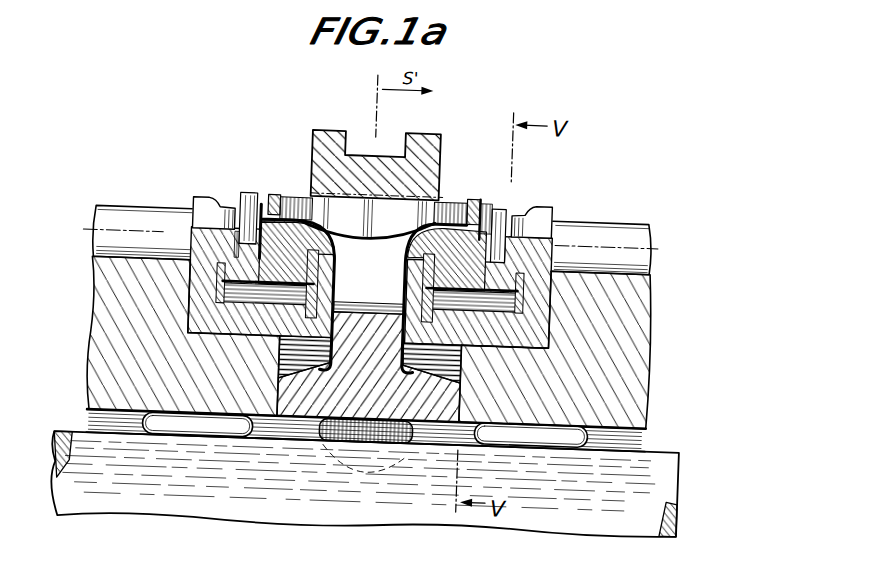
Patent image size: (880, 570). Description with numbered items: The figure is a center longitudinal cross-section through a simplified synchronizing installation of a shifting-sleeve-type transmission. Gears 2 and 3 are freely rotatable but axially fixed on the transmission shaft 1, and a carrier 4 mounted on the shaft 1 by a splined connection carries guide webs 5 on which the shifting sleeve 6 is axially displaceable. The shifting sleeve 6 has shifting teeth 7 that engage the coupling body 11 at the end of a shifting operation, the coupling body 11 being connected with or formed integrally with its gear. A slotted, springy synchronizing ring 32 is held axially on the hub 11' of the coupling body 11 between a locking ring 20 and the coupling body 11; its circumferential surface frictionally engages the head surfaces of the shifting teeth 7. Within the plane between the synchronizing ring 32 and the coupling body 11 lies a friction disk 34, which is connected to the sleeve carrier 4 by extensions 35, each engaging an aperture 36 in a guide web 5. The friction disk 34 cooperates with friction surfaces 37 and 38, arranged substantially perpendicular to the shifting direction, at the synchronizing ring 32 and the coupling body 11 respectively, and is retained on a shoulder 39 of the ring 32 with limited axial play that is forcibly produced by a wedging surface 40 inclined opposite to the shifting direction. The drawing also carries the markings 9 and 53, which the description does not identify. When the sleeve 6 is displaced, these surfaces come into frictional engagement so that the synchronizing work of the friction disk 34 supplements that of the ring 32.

The transmission shaft 1 is at (579, 519).
The gear 2 is at (90, 319).
The gear 3 is at (649, 349).
The carrier 4 is at (303, 415).
The guide webs 5 is at (453, 202).
The shifting sleeve 6 is at (382, 165).
The shifting teeth 7 is at (374, 218).
The sleeve 9 is at (200, 203).
The coupling body 11 is at (502, 267).
The hub 11' is at (504, 365).
The locking ring 20 is at (419, 300).
The synchronizing ring 32 is at (278, 276).
The friction disk 34 is at (297, 253).
The extensions 35 is at (243, 205).
The aperture 36 is at (262, 194).
The friction surface 37 is at (252, 255).
The friction surface 38 is at (228, 259).
The shoulder 39 is at (221, 278).
The wedging surface 40 is at (504, 264).
The sealing lip 53 is at (292, 214).